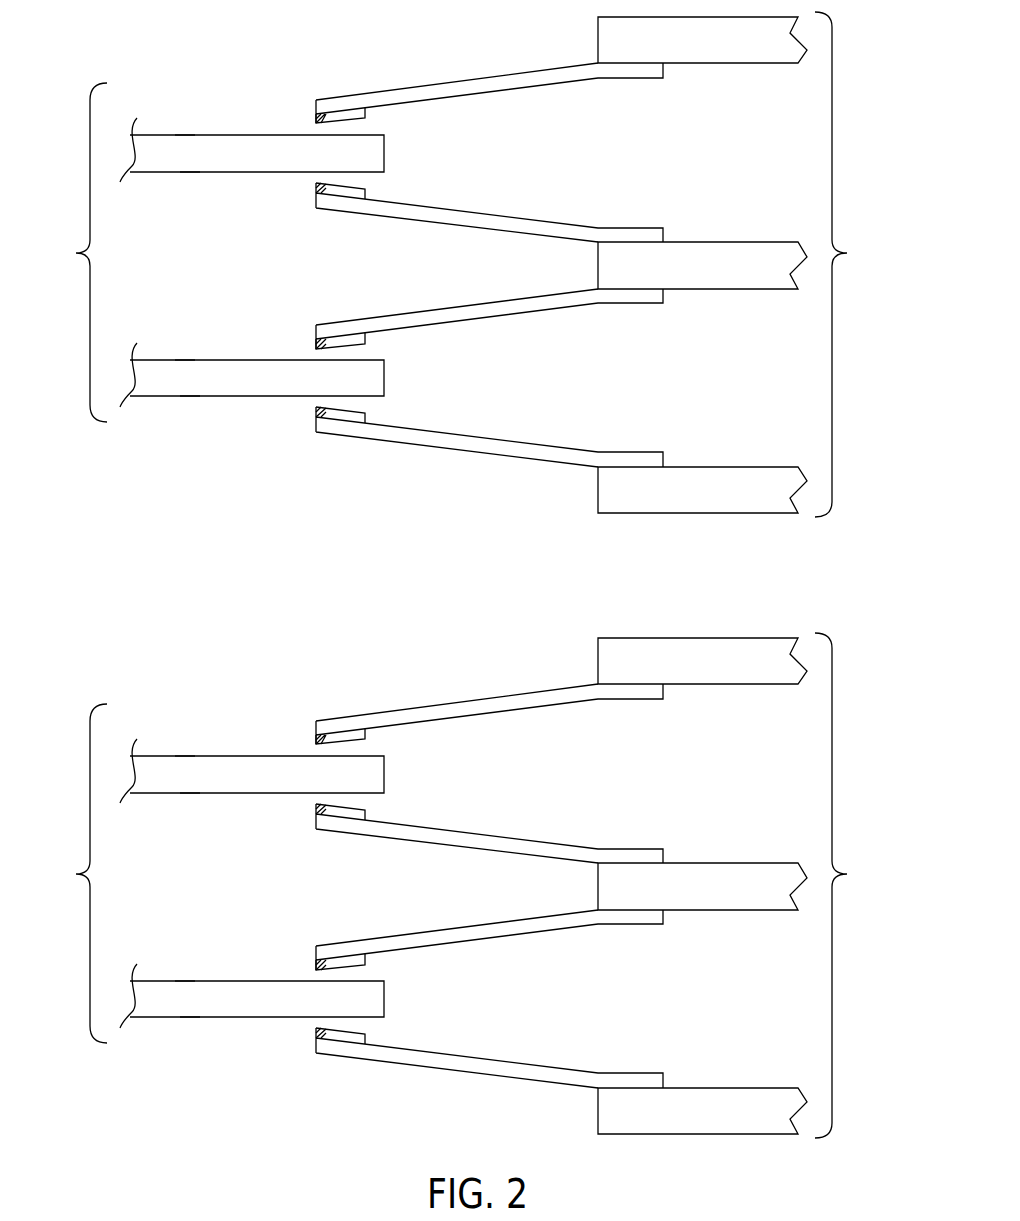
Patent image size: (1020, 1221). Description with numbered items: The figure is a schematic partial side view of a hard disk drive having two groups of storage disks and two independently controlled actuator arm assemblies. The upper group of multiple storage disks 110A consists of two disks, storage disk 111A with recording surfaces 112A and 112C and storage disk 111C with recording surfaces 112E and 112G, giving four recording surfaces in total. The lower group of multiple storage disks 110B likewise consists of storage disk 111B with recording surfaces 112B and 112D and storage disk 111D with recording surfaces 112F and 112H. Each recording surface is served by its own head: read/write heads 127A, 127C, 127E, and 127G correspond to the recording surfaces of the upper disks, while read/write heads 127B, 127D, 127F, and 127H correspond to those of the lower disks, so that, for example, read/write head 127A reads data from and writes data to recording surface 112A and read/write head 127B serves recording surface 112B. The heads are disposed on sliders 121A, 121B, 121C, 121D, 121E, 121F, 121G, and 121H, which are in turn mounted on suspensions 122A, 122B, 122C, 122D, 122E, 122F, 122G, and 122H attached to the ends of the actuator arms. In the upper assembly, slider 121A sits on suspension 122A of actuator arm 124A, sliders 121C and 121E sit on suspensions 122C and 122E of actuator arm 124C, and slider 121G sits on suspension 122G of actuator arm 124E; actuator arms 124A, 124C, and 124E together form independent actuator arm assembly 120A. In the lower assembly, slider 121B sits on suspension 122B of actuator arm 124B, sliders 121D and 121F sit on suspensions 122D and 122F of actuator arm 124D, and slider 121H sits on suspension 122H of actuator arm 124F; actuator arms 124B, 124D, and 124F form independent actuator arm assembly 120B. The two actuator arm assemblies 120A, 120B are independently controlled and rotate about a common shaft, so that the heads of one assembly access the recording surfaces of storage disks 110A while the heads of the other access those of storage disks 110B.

The multiple storage disks 110A is at (62, 252).
The multiple storage disks 110B is at (62, 873).
The storage disk 111A is at (283, 163).
The storage disk 111B is at (252, 771).
The storage disk 111C is at (283, 388).
The storage disk 111D is at (252, 996).
The recording surface 112A is at (185, 135).
The recording surface 112B is at (169, 724).
The recording surface 112C is at (190, 172).
The recording surface 112D is at (164, 818).
The recording surface 112E is at (185, 360).
The recording surface 112F is at (169, 949).
The recording surface 112G is at (190, 396).
The recording surface 112H is at (164, 1041).
The independent actuator arm assembly 120A is at (859, 264).
The independent actuator arm assembly 120B is at (859, 885).
The slider 121A is at (366, 115).
The slider 121B is at (403, 735).
The slider 121C is at (366, 192).
The slider 121D is at (404, 803).
The slider 121E is at (366, 337).
The slider 121F is at (403, 956).
The slider 121G is at (366, 415).
The slider 121H is at (404, 1026).
The suspension 122A is at (568, 80).
The suspension 122B is at (489, 721).
The suspension 122C is at (562, 228).
The suspension 122D is at (489, 824).
The suspension 122E is at (570, 303).
The suspension 122F is at (489, 946).
The suspension 122G is at (567, 450).
The suspension 122H is at (489, 1046).
The actuator arm 124A is at (742, 53).
The actuator arm 124B is at (702, 661).
The actuator arm 124C is at (742, 278).
The actuator arm 124D is at (702, 886).
The actuator arm 124E is at (742, 503).
The actuator arm 124F is at (702, 1111).
The read/write head 127A is at (316, 118).
The read/write head 127B is at (276, 725).
The read/write head 127C is at (316, 190).
The read/write head 127D is at (274, 821).
The read/write head 127E is at (316, 342).
The read/write head 127F is at (275, 951).
The read/write head 127G is at (316, 414).
The read/write head 127H is at (274, 1045).